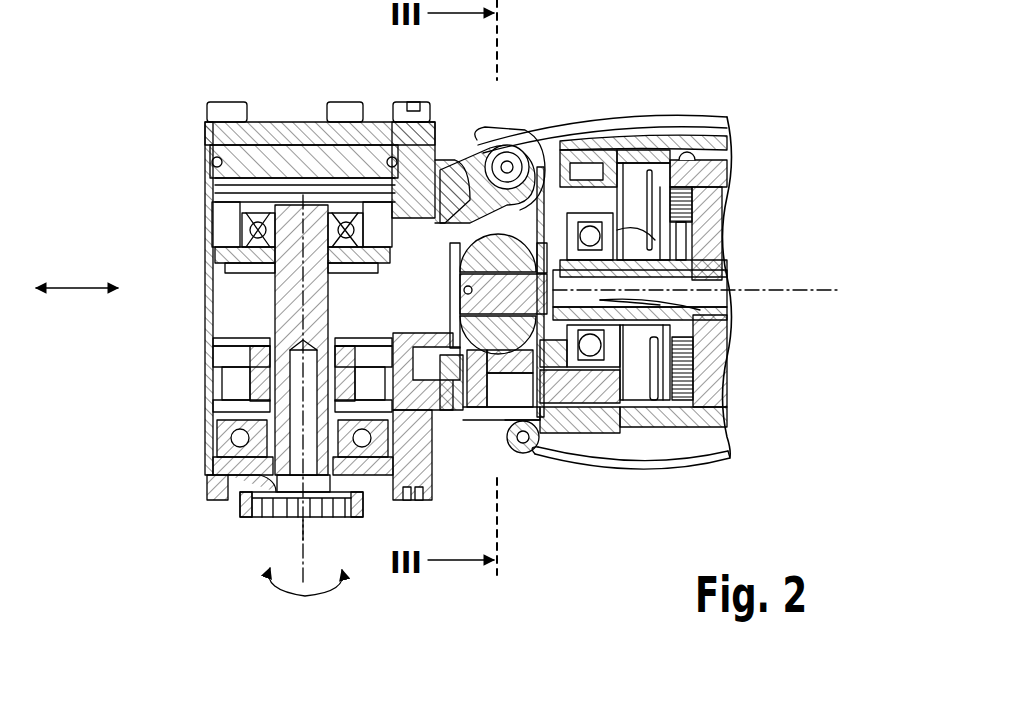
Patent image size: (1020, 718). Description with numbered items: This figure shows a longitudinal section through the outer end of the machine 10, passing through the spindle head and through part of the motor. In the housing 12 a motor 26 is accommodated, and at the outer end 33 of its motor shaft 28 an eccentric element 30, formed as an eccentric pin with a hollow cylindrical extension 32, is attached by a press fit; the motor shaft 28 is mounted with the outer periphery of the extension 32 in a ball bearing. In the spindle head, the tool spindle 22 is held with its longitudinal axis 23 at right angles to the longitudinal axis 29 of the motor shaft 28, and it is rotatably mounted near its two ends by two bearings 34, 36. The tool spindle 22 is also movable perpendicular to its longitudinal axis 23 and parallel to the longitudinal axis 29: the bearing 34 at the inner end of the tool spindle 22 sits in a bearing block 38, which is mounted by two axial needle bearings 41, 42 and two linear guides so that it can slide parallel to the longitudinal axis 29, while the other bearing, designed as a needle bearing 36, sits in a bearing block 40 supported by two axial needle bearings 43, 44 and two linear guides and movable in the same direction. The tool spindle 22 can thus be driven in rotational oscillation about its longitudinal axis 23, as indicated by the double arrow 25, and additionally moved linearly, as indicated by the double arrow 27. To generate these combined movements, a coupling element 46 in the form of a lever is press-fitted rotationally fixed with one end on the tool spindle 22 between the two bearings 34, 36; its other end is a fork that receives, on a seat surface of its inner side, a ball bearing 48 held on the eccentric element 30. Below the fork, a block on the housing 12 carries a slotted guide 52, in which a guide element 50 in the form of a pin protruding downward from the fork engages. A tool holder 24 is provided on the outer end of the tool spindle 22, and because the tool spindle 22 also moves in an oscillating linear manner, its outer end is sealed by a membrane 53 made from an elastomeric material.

The machine 10 is at (178, 100).
The housing 12 is at (578, 122).
The tool spindle 22 is at (290, 300).
The longitudinal axis 23 is at (296, 545).
The tool holder 24 is at (320, 510).
The double arrow 25 is at (305, 598).
The motor 26 is at (742, 188).
The double arrow 27 is at (80, 290).
The motor shaft 28 is at (705, 272).
The longitudinal axis 29 is at (830, 295).
The eccentric element 30 is at (705, 345).
The hollow cylindrical extension 32 is at (715, 246).
The outer end 33 is at (705, 310).
The bearing 34 is at (212, 230).
The needle bearing 36 is at (235, 368).
The bearing block 38 is at (212, 196).
The bearing block 40 is at (213, 405).
The axial needle bearing 41 is at (212, 260).
The axial needle bearing 42 is at (383, 140).
The axial needle bearing 43 is at (215, 350).
The axial needle bearing 44 is at (215, 425).
The coupling element 46 is at (462, 130).
The ball bearing 48 is at (526, 130).
The guide element 50 is at (497, 390).
The slotted guide 52 is at (522, 447).
The membrane 53 is at (232, 464).